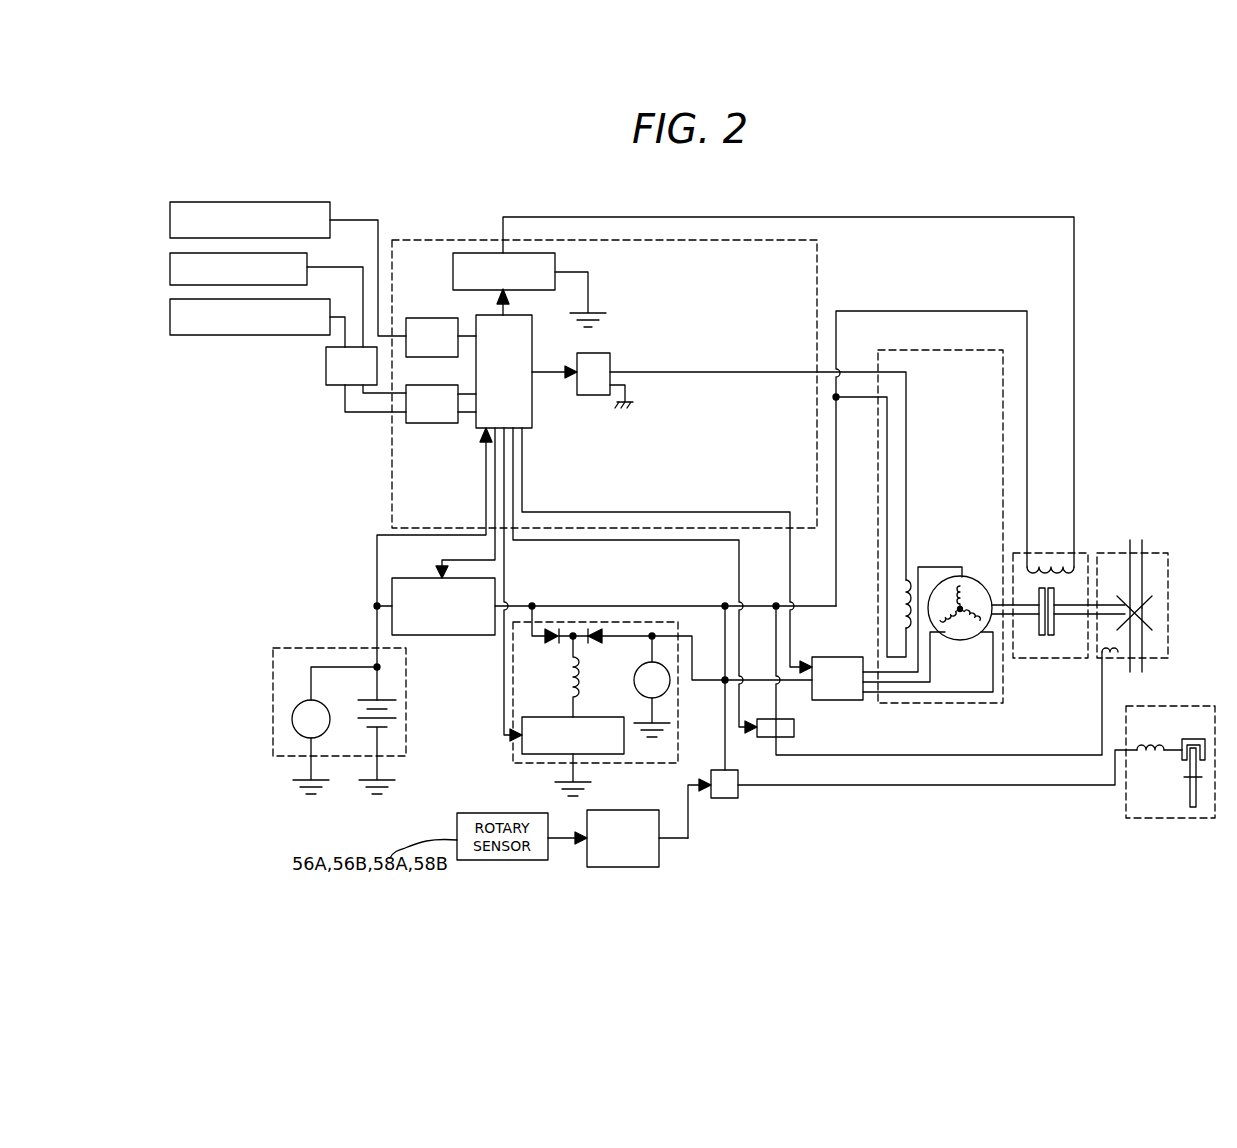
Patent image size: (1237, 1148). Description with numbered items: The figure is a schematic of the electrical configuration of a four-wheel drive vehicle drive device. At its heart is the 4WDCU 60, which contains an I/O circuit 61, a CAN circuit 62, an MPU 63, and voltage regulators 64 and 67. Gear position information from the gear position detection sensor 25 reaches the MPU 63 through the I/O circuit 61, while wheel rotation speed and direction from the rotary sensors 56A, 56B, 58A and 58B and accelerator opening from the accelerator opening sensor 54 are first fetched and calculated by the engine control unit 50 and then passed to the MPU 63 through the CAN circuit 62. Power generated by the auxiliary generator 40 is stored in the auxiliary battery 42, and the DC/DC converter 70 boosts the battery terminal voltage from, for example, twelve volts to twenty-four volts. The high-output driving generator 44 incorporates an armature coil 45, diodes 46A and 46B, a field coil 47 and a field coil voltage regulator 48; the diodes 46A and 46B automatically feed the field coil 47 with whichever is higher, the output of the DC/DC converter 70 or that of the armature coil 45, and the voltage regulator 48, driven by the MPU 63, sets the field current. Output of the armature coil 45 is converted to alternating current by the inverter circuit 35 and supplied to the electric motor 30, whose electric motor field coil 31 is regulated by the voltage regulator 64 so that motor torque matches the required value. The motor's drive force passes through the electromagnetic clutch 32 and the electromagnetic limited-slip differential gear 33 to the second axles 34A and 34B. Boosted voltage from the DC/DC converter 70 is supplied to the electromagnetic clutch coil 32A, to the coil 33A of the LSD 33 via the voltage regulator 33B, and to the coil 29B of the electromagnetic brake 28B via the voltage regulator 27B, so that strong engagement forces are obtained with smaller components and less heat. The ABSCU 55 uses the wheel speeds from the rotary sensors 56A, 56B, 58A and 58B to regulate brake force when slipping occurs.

The gear position detection sensor 25 is at (185, 202).
The rotary sensor 56A is at (208, 322).
The rotary sensor 56B is at (208, 322).
The rotary sensor 58A is at (208, 322).
The rotary sensor 58B is at (170, 277).
The accelerator opening sensor 54 is at (253, 335).
The engine control unit 50 is at (326, 372).
The 4WDCU 60 is at (817, 260).
The voltage regulator 67 is at (467, 253).
The I/O circuit 61 is at (421, 318).
The CAN circuit 62 is at (426, 423).
The MPU 63 is at (532, 410).
The voltage regulator 64 is at (598, 395).
The DC/DC converter 70 is at (462, 635).
The auxiliary generator 40 is at (344, 721).
The auxiliary battery 42 is at (398, 714).
The high-output driving generator 44 is at (662, 685).
The diode 46A is at (598, 629).
The diode 46B is at (553, 629).
The field coil 47 is at (565, 682).
The armature coil 45 is at (634, 680).
The field coil voltage regulator 48 is at (528, 757).
The voltage regulator 27B is at (727, 799).
The ABSCU 55 is at (659, 860).
The voltage regulator 33B is at (794, 728).
The inverter circuit 35 is at (848, 657).
The electric motor 30 is at (925, 548).
The electric motor field coil 31 is at (900, 590).
The electromagnetic clutch 32 is at (1050, 612).
The electromagnetic clutch coil 32A is at (1050, 560).
The electromagnetic limited-slip differential gear 33 is at (1168, 601).
The second axle 34A is at (1142, 547).
The second axle 34B is at (1142, 668).
The coil 33A is at (1120, 655).
The electromagnetic brake 28B is at (1170, 787).
The coil 29B is at (1150, 757).